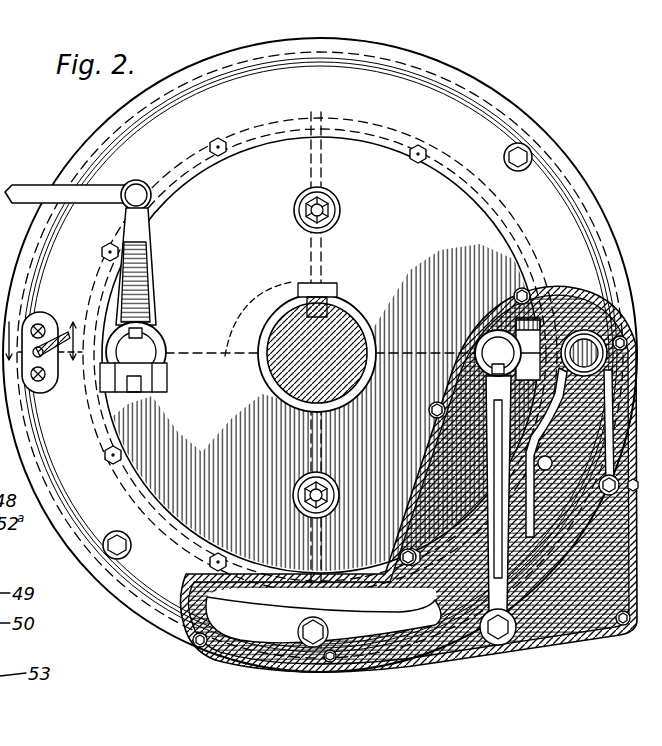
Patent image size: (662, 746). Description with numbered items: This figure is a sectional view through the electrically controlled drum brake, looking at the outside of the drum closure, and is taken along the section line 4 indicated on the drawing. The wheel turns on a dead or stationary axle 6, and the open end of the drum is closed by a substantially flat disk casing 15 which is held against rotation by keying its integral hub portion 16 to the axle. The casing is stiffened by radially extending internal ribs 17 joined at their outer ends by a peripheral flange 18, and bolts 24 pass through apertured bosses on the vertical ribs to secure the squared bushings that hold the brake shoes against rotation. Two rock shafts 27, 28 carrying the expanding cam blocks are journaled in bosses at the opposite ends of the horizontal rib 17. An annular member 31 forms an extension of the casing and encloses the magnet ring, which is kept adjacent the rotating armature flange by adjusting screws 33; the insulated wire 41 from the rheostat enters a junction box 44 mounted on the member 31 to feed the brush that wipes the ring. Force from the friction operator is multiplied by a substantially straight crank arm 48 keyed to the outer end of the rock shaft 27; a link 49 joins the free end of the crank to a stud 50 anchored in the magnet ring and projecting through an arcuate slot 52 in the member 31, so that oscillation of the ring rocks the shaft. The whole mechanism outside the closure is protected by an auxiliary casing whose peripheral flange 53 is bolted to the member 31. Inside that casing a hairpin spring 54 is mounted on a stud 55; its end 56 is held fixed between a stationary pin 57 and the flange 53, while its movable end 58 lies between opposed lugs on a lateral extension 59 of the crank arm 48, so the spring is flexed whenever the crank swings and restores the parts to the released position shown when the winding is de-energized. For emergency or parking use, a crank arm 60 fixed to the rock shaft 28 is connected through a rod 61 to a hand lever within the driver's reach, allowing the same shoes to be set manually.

The section line 4- 4 is at (45, 334).
The stationary axle 6 is at (345, 320).
The casing 15 is at (324, 355).
The hub portion 16 is at (330, 300).
The internal ribs 17 is at (290, 281).
The peripheral flange 18 is at (342, 114).
The bolts 24 is at (340, 214).
The rock shaft 27 is at (492, 343).
The rock shaft 28 is at (150, 351).
The annular member 31 is at (320, 349).
The adjusting screws 33 is at (528, 151).
The wire 41 is at (53, 390).
The junction box 44 is at (40, 328).
The crank arm 48 is at (440, 426).
The link 49 is at (351, 636).
The stud 50 is at (310, 642).
The arcuate slot 52 is at (206, 650).
The peripheral flange 53 is at (418, 667).
The spring 54 is at (588, 331).
The stud 55 is at (596, 343).
The spring end 56 is at (612, 372).
The stationary pin 57 is at (611, 500).
The spring end 58 is at (562, 573).
The lateral extension 59 is at (548, 470).
The crank arm 60 is at (151, 287).
The rod 61 is at (27, 188).